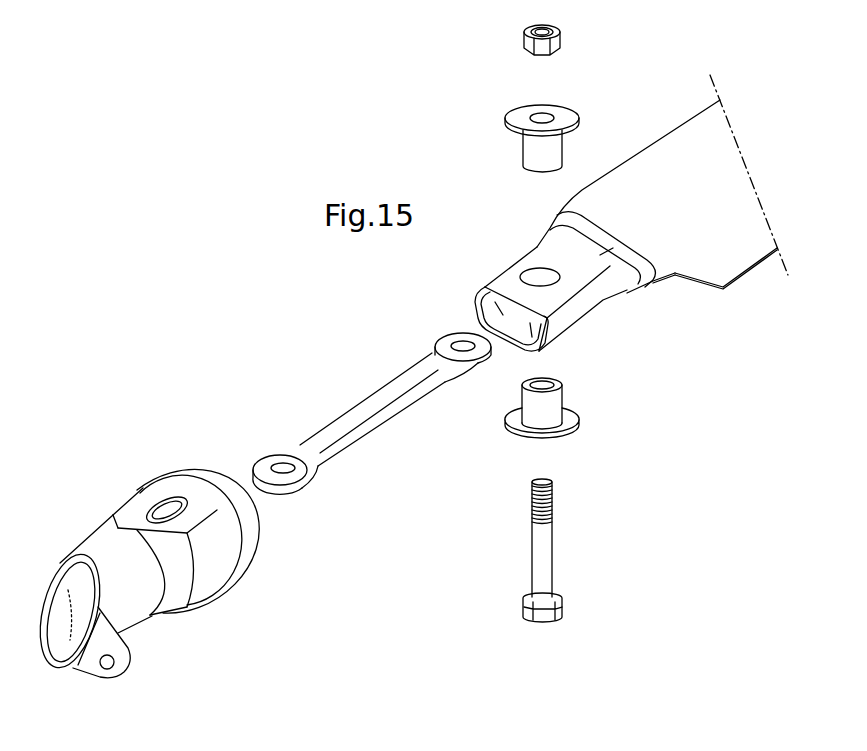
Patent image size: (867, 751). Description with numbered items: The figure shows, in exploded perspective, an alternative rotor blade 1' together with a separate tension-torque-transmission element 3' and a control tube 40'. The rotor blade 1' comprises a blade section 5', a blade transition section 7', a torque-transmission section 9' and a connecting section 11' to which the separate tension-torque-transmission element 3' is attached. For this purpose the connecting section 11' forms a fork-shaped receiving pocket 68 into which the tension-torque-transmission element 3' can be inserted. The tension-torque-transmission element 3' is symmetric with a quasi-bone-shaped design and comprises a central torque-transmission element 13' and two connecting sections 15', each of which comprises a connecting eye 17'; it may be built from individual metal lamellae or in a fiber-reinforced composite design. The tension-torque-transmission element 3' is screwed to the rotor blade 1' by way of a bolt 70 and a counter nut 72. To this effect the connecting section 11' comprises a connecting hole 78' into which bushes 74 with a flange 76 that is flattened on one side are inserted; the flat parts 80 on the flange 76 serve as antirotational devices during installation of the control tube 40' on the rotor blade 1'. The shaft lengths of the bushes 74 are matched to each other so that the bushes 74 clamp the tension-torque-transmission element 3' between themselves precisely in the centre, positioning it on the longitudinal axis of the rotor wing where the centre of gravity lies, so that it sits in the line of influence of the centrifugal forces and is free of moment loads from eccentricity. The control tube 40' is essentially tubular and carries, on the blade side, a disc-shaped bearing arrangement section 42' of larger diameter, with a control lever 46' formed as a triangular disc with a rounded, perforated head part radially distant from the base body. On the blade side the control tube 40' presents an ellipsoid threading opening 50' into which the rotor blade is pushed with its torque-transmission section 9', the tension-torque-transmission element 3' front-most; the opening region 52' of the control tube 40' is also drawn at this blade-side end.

The rotor blade 1' is at (627, 199).
The tension-torque-transmission element 3' is at (372, 410).
The blade section 5' is at (662, 181).
The blade transition section 7' is at (665, 292).
The torque-transmission section 9' is at (603, 271).
The connecting section 11' is at (547, 288).
The torque-transmission element 13' is at (372, 406).
The connecting sections 15' is at (380, 425).
The connecting eye 17' is at (372, 410).
The control tube 40' is at (112, 553).
The bearing arrangement section 42' is at (165, 517).
The control lever 46' is at (101, 669).
The threading opening 50' is at (198, 512).
The open end 52' is at (70, 626).
The fork-shaped receiving pocket 68 is at (547, 327).
The bolt 70 is at (565, 608).
The counter nut 72 is at (522, 42).
The bush 74 is at (523, 150).
The flange 76 is at (522, 110).
The connecting hole 78' is at (530, 244).
The flat parts 80 is at (565, 112).